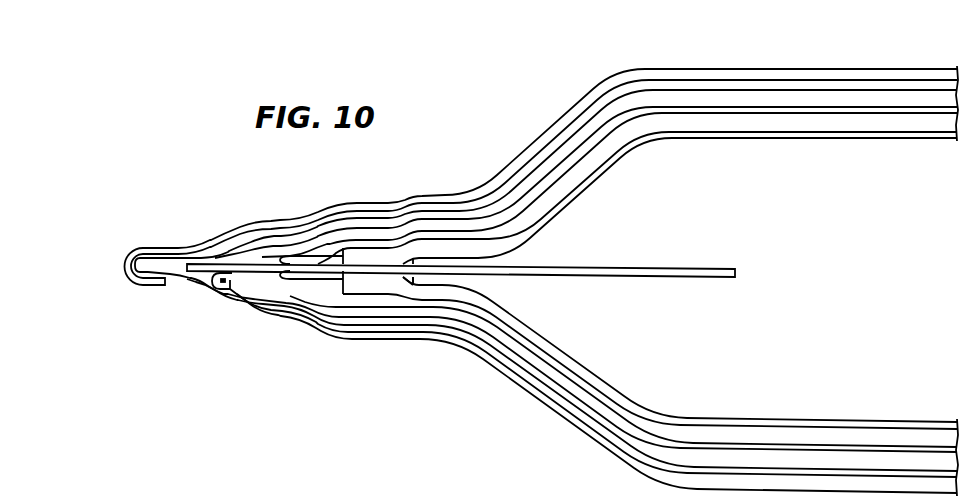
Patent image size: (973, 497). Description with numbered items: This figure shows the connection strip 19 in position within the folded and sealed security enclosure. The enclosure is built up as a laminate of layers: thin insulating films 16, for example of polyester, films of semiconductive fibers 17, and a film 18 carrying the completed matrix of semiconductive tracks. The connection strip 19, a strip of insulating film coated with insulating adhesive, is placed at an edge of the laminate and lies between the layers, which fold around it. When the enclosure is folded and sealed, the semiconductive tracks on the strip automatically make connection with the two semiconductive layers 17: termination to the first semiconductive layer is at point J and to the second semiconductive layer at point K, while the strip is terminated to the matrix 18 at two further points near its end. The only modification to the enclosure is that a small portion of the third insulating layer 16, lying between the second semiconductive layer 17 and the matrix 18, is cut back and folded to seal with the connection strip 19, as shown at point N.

The insulating film layer 16 is at (752, 128).
The semiconductive fiber layer 17 is at (820, 118).
The matrix layer 18 is at (892, 80).
The connection strip 19 is at (593, 278).
The cut-back fold point N is at (226, 283).
The second semiconductive layer termination point K is at (265, 278).
The first semiconductive layer termination point J is at (377, 277).